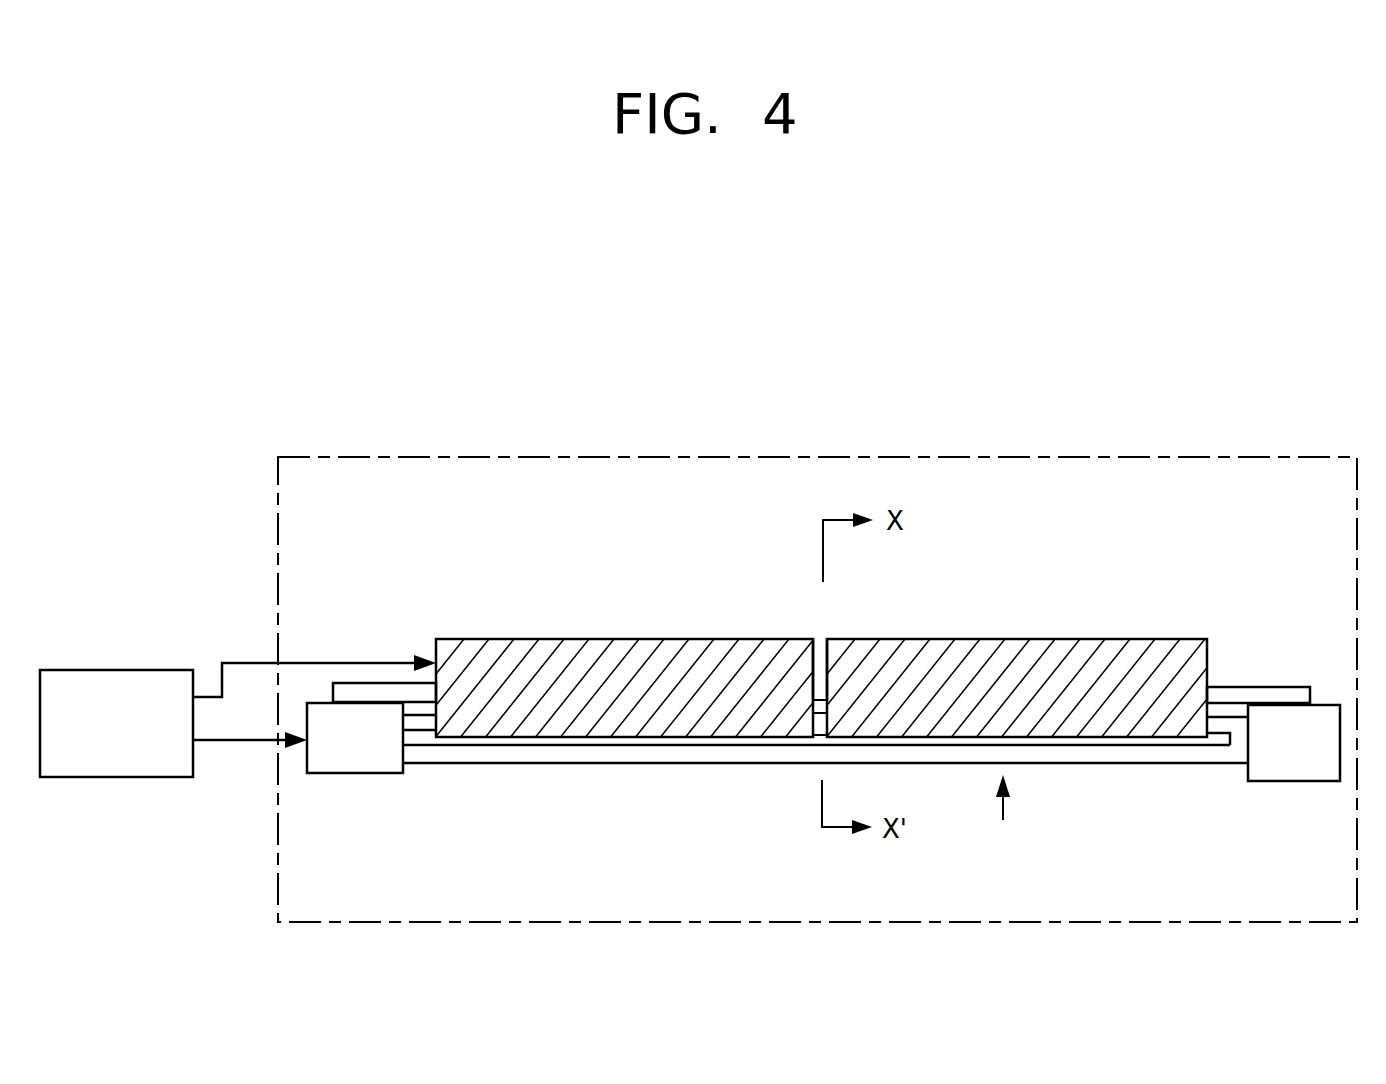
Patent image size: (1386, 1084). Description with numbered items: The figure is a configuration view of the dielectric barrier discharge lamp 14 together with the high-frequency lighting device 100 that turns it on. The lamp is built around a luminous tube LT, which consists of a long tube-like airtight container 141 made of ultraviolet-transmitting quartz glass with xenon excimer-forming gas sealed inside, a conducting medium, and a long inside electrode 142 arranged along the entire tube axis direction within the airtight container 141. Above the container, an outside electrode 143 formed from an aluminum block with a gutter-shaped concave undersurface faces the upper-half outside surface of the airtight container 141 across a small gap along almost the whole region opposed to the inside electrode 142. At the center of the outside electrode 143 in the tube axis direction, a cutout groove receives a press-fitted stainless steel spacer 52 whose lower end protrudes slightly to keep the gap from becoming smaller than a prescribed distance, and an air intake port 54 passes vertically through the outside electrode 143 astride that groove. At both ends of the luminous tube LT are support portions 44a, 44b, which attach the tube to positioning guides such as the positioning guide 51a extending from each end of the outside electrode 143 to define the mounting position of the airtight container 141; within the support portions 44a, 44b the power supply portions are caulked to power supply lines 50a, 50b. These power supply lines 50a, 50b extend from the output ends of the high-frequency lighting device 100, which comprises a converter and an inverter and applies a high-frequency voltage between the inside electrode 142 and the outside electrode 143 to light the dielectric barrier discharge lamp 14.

The dielectric barrier discharge lamp 14 is at (689, 455).
The high-frequency lighting device 100 is at (125, 669).
The power supply line 50a is at (240, 661).
The power supply line 50b is at (224, 745).
The support portion 44a is at (355, 775).
The support portion 44b is at (1292, 783).
The positioning guide 51a is at (372, 682).
The airtight container 141 is at (668, 765).
The inside electrode 142 is at (560, 748).
The outside electrode 143 is at (622, 655).
The spacer 52 is at (816, 662).
The air intake port 54 is at (822, 637).
The luminous tube LT is at (1003, 814).